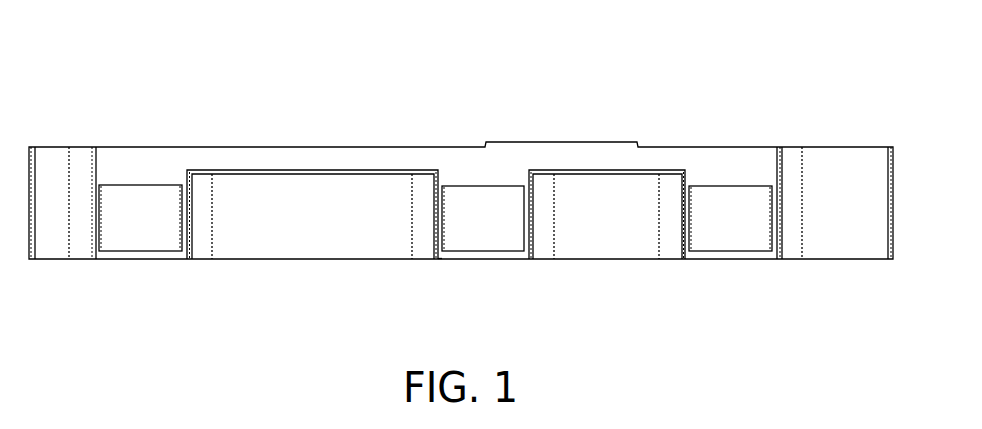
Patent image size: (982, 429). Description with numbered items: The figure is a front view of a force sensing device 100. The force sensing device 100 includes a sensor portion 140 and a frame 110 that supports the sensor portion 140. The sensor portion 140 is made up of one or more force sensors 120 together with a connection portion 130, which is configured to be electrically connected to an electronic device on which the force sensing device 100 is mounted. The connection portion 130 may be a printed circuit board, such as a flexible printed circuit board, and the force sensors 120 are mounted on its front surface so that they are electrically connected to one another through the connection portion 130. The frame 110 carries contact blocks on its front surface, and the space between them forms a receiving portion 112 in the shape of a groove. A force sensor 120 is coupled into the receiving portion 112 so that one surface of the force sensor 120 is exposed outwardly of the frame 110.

The force sensing device 100 is at (488, 67).
The frame 110 is at (303, 259).
The receiving portion 112 is at (437, 255).
The force sensor 120 is at (141, 210).
The connection portion 130 is at (252, 160).
The sensor portion 140 is at (120, 80).